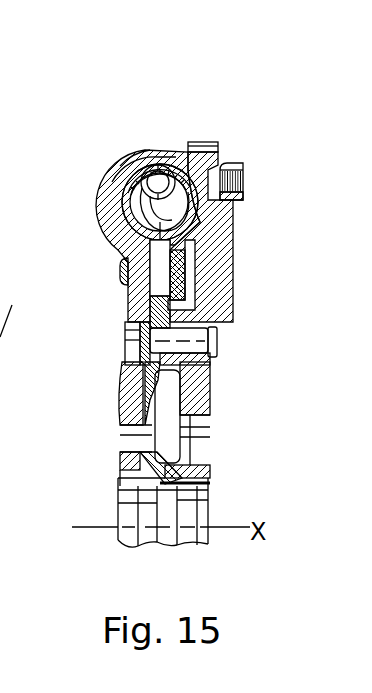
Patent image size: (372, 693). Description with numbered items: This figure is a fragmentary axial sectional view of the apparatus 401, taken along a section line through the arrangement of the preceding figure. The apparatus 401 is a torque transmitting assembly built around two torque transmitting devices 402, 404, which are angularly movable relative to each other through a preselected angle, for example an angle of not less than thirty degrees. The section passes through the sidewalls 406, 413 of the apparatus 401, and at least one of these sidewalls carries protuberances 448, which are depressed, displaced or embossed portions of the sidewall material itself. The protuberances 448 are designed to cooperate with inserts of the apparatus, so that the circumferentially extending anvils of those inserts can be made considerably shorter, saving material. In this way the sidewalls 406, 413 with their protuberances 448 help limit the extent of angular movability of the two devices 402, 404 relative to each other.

The apparatus 401 is at (206, 124).
The torque transmitting device 402 is at (106, 174).
The torque transmitting device 404 is at (249, 164).
The sidewall 406 is at (110, 213).
The sidewall 413 is at (203, 217).
The protuberance 448 is at (172, 270).